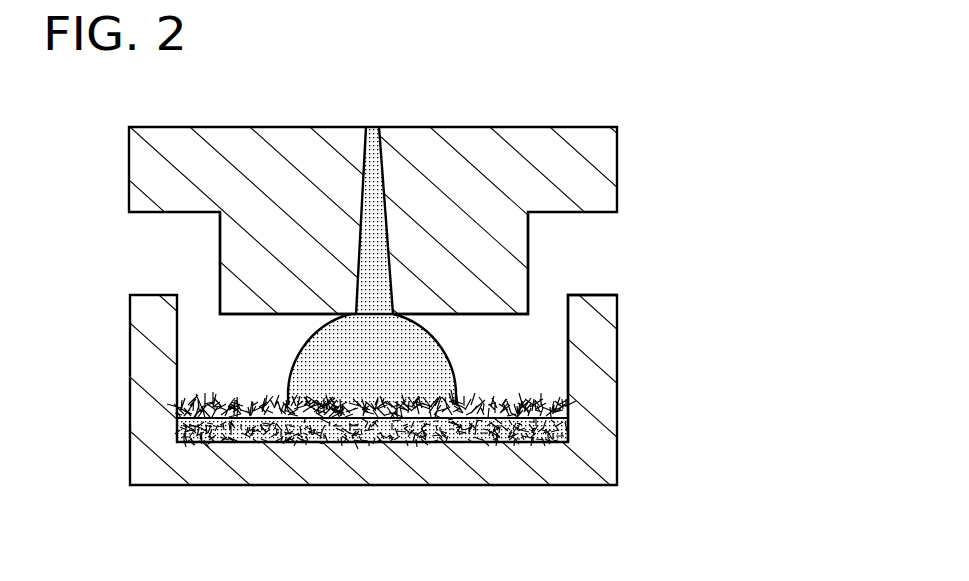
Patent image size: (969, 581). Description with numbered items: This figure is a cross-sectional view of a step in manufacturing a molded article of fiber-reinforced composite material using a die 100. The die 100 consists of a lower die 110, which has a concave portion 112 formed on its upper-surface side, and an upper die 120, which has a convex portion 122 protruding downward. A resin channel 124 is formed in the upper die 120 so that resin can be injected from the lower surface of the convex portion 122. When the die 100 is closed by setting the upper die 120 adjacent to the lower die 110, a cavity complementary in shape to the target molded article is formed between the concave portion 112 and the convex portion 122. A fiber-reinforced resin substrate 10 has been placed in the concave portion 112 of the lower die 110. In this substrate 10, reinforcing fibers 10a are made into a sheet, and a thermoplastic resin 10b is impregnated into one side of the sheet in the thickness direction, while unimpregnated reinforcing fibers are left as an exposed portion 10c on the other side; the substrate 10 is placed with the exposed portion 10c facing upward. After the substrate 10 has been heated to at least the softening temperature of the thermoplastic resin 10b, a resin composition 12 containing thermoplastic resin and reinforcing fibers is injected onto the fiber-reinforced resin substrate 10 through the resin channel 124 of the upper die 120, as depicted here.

The die 100 is at (622, 90).
The upper die 120 is at (617, 167).
The convex portion 122 is at (530, 257).
The resin channel 124 is at (377, 200).
The resin composition (Y) 12 is at (453, 362).
The lower die 110 is at (617, 468).
The concave portion 112 is at (575, 325).
The fiber-reinforced resin substrate (X) 10 is at (433, 426).
The reinforcing fibers (x2) 10a is at (243, 400).
The thermoplastic resin (x1) 10b is at (470, 432).
The exposed portion 10c is at (208, 392).